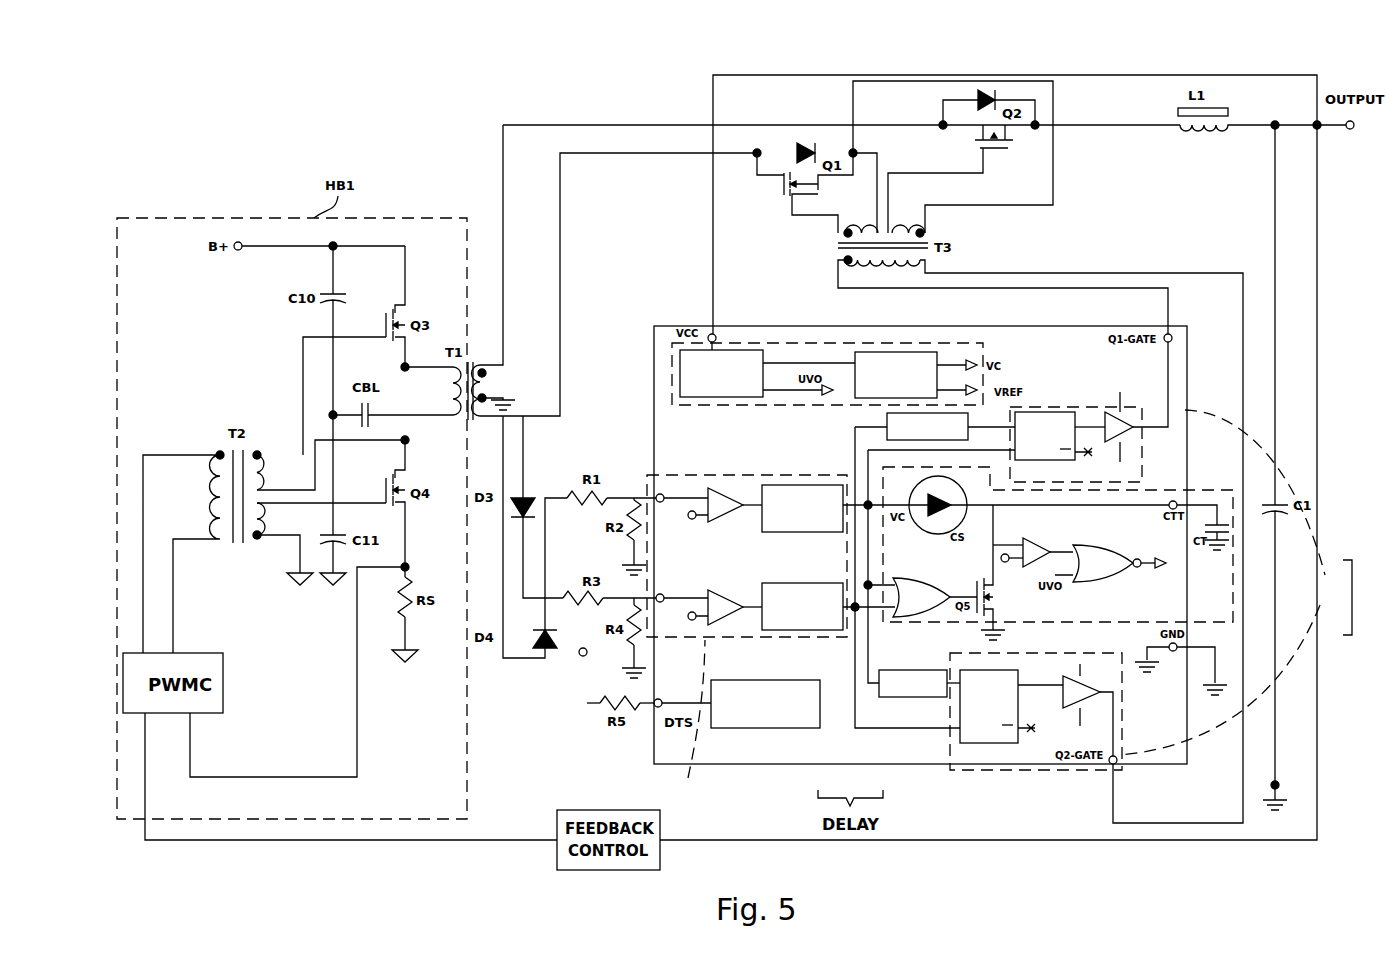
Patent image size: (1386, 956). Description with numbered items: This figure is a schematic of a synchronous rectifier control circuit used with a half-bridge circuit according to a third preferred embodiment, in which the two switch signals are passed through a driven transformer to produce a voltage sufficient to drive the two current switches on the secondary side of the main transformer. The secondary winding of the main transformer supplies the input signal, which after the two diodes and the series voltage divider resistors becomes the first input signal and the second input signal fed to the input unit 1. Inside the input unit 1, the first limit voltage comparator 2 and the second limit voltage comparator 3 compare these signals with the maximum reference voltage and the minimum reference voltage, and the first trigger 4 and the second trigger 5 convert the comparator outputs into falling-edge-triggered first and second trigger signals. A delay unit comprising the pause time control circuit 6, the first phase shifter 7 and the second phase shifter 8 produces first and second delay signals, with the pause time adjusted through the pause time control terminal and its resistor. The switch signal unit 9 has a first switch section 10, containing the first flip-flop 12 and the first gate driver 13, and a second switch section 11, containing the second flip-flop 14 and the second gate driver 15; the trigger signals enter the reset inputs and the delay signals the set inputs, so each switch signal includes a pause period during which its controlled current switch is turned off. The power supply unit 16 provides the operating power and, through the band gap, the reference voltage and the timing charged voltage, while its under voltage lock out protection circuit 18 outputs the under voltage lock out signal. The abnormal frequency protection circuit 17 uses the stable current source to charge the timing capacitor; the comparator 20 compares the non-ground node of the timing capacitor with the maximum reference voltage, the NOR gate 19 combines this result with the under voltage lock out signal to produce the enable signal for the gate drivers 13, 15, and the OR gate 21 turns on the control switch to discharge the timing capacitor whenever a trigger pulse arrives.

The input unit 1 is at (697, 762).
The first limit voltage comparator 2 is at (727, 486).
The second limit voltage comparator 3 is at (727, 588).
The first trigger 4 is at (800, 485).
The second trigger 5 is at (800, 583).
The pause time control circuit 6 is at (805, 728).
The first phase shifter 7 is at (905, 697).
The second phase shifter 8 is at (868, 677).
The switch signal unit 9 is at (1353, 565).
The first switch section 10 is at (1269, 501).
The second switch section 11 is at (1307, 626).
The first flip-flop 12 is at (1072, 412).
The first gate driver 13 is at (1140, 440).
The second flip-flop 14 is at (990, 745).
The second gate driver 15 is at (1090, 700).
The power supply unit 16 is at (952, 342).
The abnormal frequency protection circuit 17 is at (1210, 490).
The under voltage lock out protection circuit 18 is at (740, 348).
The NOR gate 19 is at (1110, 546).
The comparator 20 is at (1042, 543).
The OR gate 21 is at (915, 580).